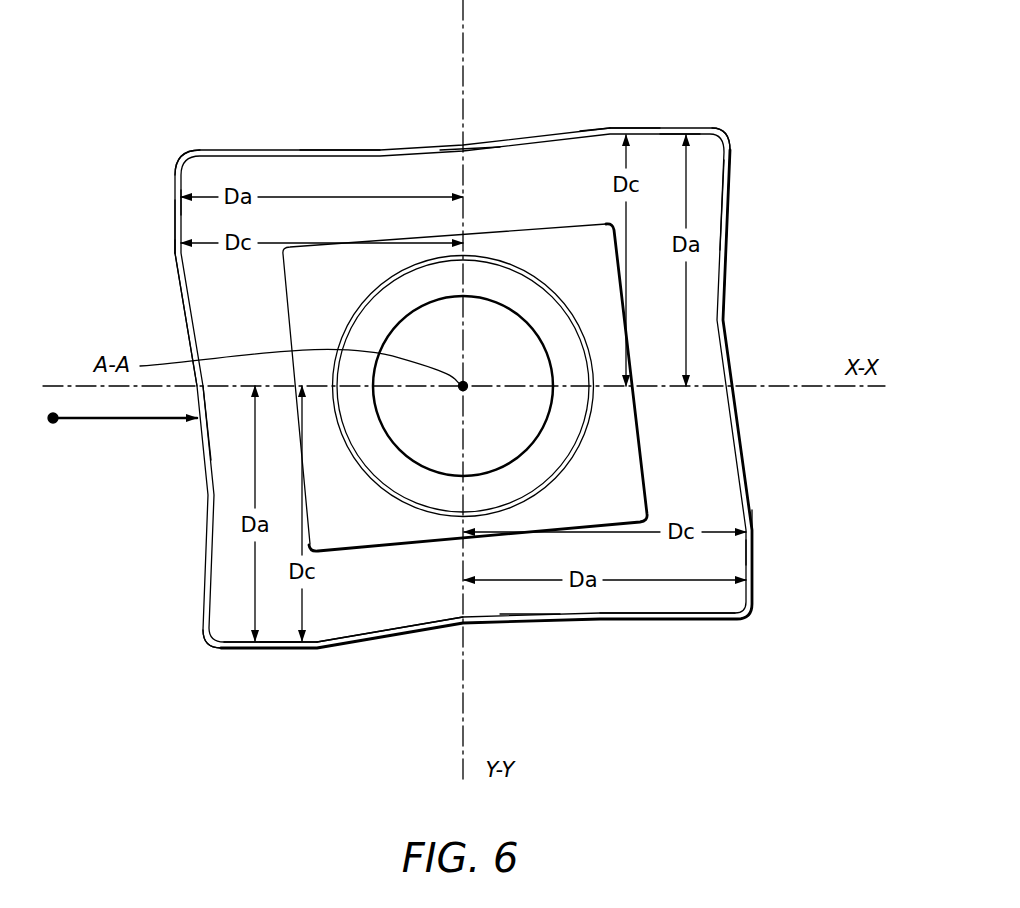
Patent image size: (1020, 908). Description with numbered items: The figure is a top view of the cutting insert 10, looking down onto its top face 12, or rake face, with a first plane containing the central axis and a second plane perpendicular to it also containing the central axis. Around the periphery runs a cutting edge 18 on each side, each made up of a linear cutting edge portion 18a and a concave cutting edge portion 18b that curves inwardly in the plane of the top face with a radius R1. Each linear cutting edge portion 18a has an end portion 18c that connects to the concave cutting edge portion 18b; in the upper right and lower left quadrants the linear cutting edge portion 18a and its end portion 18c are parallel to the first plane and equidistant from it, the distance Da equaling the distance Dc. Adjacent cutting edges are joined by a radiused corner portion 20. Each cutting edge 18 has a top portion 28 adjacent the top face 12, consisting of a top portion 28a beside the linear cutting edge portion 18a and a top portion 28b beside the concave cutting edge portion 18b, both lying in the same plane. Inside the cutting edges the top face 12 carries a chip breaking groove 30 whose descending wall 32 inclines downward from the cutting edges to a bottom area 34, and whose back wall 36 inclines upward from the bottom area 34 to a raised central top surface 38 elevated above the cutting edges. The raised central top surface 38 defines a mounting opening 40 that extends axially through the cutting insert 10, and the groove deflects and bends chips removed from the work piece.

The cutting insert 10 is at (818, 147).
The top face 12 is at (700, 205).
The peripheral cutting edge 18 is at (418, 147).
The linear cutting edge portion 18a is at (173, 227).
The concave cutting edge portion 18b is at (192, 347).
The end portion 18c is at (173, 253).
The radiused corner portion 20 is at (183, 157).
The top portion 28 is at (183, 297).
The top portion adjacent linear cutting edge portion 28a is at (177, 200).
The top portion adjacent concave cutting edge portion 28b is at (207, 480).
The chip breaking groove 30 is at (283, 597).
The descending wall 32 is at (628, 592).
The bottom area 34 is at (420, 572).
The back wall 36 is at (623, 540).
The raised central top surface 38 is at (318, 273).
The mounting opening 40 is at (480, 363).
The radius of concave cutting edge portion R1 is at (119, 434).